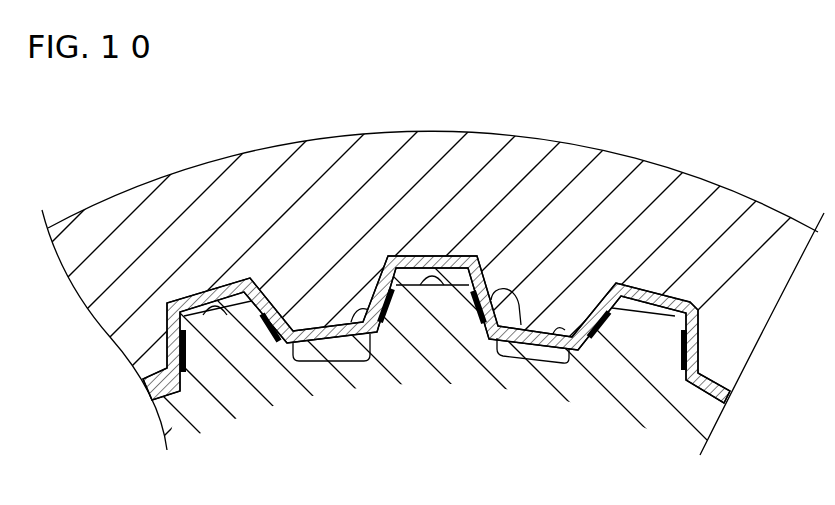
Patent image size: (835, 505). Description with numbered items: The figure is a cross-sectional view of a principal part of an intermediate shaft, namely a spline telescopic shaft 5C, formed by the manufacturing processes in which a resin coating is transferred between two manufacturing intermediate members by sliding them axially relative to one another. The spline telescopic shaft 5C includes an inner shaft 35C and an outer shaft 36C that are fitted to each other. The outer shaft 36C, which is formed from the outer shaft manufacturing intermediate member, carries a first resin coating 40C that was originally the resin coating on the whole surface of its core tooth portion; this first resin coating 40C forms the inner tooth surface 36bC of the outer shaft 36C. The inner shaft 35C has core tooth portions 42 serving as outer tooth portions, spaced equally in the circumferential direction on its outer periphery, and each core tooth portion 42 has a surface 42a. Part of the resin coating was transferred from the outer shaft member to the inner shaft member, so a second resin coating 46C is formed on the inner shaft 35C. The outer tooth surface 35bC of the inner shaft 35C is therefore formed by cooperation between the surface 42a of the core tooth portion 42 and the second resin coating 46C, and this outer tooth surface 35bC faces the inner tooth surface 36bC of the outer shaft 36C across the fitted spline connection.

The spline telescopic shaft 5C is at (773, 103).
The outer shaft 36C is at (543, 132).
The inner tooth surface 36bC is at (667, 297).
The first resin coating 40C is at (697, 302).
The core tooth portion 42 is at (324, 360).
The surface of core tooth portion 42a is at (207, 312).
The second resin coating 46C is at (292, 340).
The inner shaft 35C is at (571, 340).
The outer tooth surface 35bC is at (447, 305).